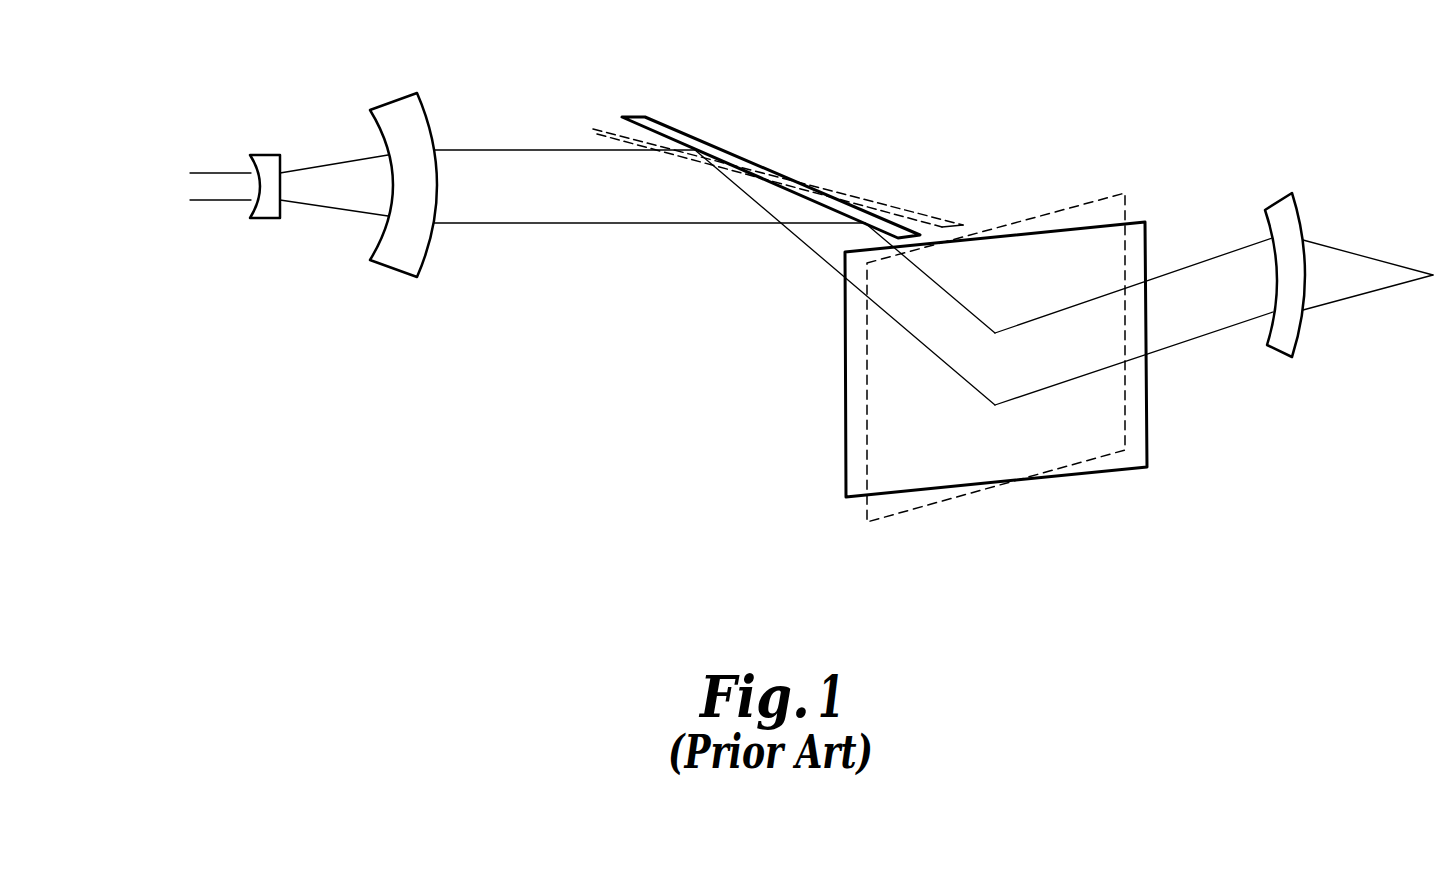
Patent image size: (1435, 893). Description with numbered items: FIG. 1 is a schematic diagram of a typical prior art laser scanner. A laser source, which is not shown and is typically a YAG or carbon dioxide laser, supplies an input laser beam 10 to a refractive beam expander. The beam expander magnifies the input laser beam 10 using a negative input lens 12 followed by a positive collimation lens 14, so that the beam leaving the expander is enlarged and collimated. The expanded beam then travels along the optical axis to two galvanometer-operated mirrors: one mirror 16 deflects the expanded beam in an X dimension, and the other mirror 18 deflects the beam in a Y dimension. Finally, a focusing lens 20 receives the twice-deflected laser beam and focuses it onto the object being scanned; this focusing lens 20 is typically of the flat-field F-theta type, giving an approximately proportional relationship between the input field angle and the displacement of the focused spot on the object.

The input laser beam 10 is at (218, 180).
The negative input lens 12 is at (267, 158).
The positive collimation lens 14 is at (395, 107).
The mirror 16 is at (663, 123).
The mirror 18 is at (1148, 233).
The focusing lens 20 is at (1290, 213).